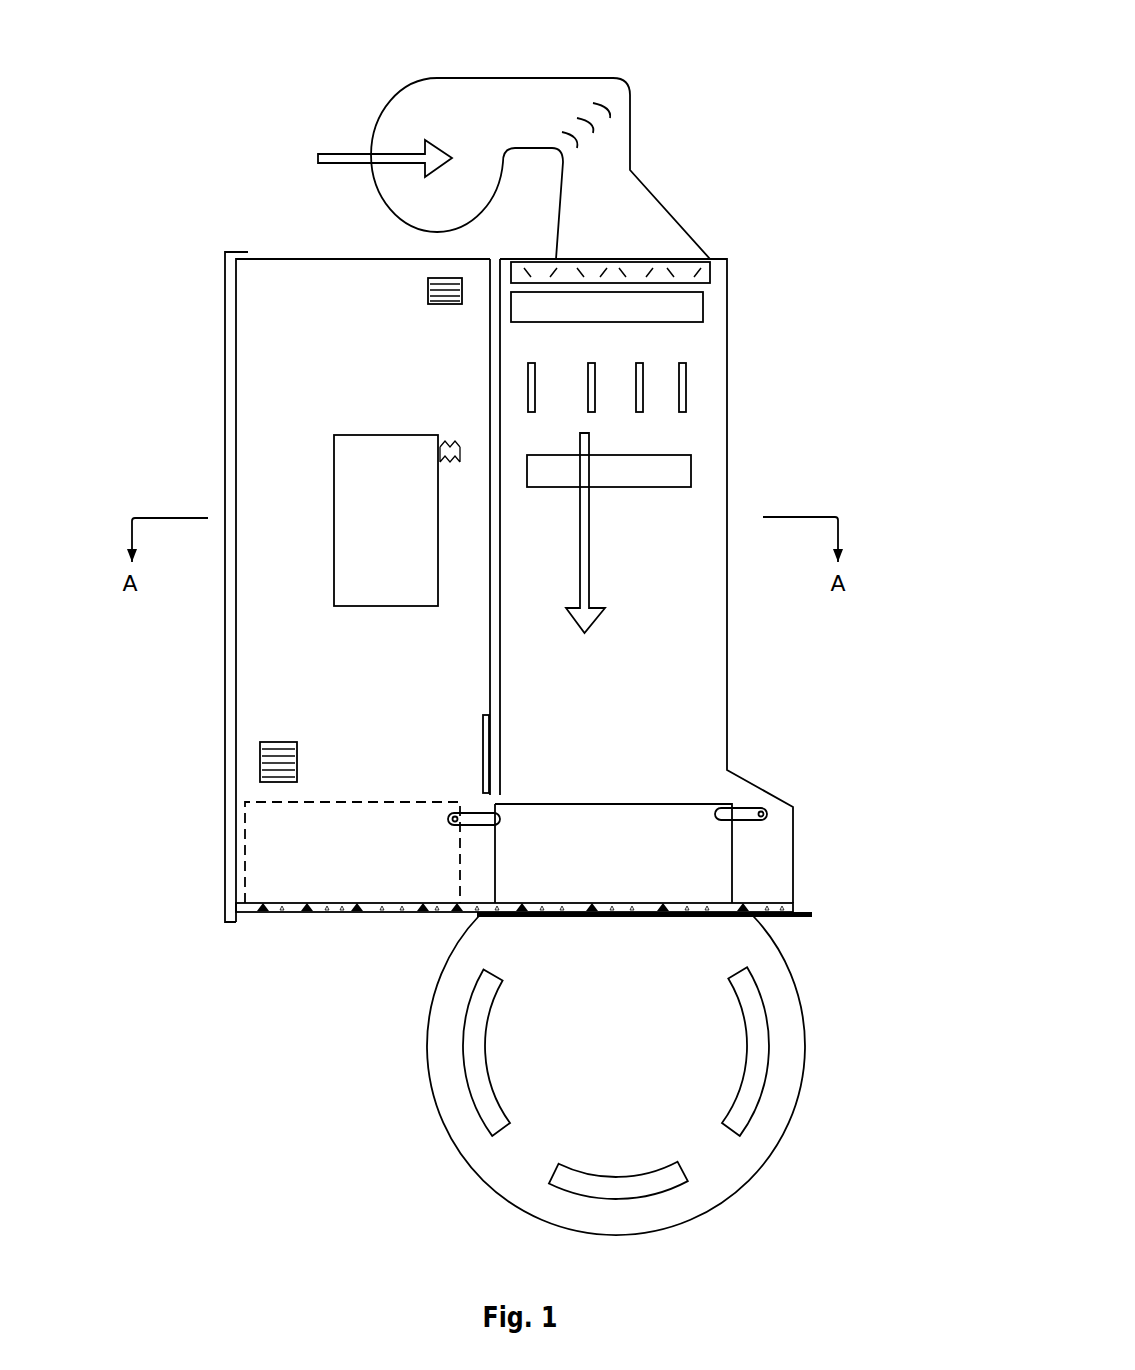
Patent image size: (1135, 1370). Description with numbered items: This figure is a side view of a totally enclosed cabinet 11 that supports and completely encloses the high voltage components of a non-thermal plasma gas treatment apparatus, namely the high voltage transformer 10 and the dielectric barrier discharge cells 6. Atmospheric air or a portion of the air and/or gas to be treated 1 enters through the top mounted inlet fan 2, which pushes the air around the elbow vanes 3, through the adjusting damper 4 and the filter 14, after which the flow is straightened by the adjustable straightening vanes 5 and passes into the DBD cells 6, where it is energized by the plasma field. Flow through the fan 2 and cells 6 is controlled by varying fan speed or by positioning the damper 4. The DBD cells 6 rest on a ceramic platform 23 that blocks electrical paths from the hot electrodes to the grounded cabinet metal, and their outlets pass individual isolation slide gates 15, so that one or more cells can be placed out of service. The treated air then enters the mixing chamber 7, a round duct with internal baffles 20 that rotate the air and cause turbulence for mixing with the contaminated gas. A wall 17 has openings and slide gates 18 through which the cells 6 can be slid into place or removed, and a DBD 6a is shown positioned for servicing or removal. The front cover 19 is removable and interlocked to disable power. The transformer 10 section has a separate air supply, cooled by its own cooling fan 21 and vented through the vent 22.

The air and/or gas to be treated 1 is at (338, 152).
The top mounted fan 2 is at (453, 112).
The elbow vanes 3 is at (612, 97).
The adjusting damper 4 is at (660, 260).
The straightening vanes 5 is at (694, 468).
The DBD cells 6 is at (707, 855).
The DBD positioned for servicing 6a is at (292, 852).
The mixing chamber 7 is at (648, 1089).
The high voltage transformer 10 is at (365, 487).
The cabinet 11 is at (319, 344).
The filter 14 is at (705, 305).
The DBD isolation slide gates 15 is at (815, 919).
The wall 17 is at (487, 703).
The slide gates 18 is at (483, 759).
The cover 19 is at (222, 275).
The internal baffles 20 is at (462, 1055).
The cooling fan 21 is at (257, 750).
The vent 22 is at (423, 292).
The ceramic platform 23 is at (797, 905).